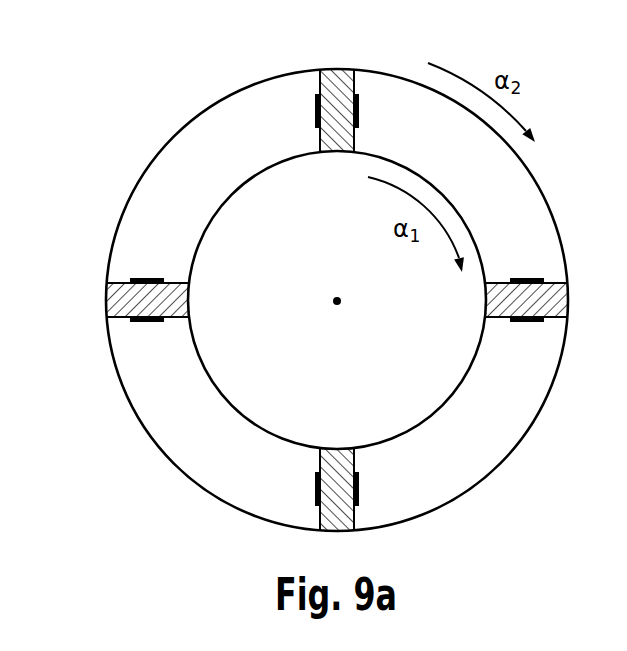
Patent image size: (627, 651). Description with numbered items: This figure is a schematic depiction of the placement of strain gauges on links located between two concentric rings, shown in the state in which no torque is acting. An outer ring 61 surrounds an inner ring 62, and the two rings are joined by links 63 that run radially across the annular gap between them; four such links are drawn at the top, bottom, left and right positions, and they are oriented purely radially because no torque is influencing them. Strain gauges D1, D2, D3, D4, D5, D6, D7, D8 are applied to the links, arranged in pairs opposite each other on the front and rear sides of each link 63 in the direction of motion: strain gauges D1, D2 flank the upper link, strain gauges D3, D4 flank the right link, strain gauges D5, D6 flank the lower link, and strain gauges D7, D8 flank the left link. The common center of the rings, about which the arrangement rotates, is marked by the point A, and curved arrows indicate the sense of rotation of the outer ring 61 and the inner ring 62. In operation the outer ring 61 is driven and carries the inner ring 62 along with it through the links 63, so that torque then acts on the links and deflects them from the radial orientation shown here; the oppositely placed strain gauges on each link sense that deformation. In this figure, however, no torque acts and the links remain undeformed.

The outer ring 61 is at (262, 78).
The inner ring 62 is at (245, 182).
The link 63 is at (343, 70).
The strain gauge D1 is at (302, 111).
The strain gauge D2 is at (372, 111).
The strain gauge D3 is at (527, 267).
The strain gauge D4 is at (527, 335).
The strain gauge D5 is at (372, 489).
The strain gauge D6 is at (298, 489).
The strain gauge D7 is at (147, 333).
The strain gauge D8 is at (147, 266).
The rotation axis A is at (334, 301).